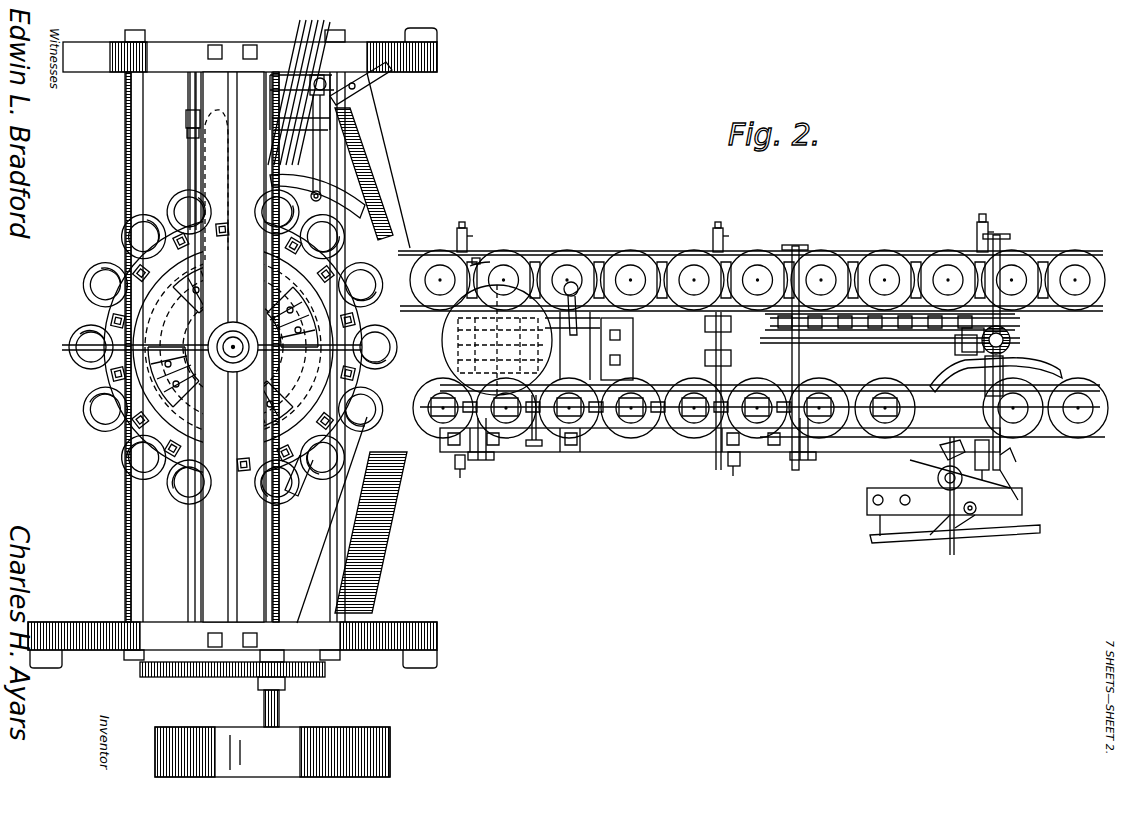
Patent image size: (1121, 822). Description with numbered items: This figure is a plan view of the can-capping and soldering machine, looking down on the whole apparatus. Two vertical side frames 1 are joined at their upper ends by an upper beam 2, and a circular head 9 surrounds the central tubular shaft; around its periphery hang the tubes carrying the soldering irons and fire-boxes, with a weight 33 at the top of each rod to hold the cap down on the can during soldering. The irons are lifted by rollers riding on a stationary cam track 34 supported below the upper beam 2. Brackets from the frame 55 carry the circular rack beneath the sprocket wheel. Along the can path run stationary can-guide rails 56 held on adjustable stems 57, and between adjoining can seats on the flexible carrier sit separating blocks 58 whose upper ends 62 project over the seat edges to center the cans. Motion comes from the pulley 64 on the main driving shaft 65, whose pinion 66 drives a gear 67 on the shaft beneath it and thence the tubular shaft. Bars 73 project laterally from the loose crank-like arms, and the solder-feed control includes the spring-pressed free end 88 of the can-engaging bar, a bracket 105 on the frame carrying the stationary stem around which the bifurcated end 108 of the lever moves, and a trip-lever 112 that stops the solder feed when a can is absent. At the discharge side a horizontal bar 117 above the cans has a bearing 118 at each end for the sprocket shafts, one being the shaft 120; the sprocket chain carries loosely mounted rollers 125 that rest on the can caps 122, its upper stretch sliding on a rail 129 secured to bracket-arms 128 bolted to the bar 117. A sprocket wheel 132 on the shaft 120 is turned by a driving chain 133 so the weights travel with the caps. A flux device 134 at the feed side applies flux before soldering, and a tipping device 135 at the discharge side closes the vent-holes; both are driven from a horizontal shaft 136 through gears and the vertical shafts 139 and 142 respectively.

The vertical side frame 1 is at (405, 635).
The upper beam 2 is at (235, 347).
The circular head 9 is at (78, 378).
The weight 33 is at (92, 347).
The cam track 34 is at (382, 236).
The frame 55 is at (372, 512).
The can-guide rail 56 is at (856, 252).
The stem 57 is at (468, 230).
The separating block 58 is at (478, 268).
The upper end of separating block 62 is at (112, 255).
The pulley 64 is at (342, 738).
The main driving shaft 65 is at (272, 712).
The pinion 66 is at (320, 670).
The gear 67 is at (178, 678).
The bar 73 is at (196, 135).
The free end of bar 88 is at (362, 212).
The bracket 105 is at (342, 66).
The slotted or bifurcated end 108 is at (368, 82).
The trip-lever 112 is at (322, 135).
The horizontal bar 117 is at (648, 450).
The bearing 118 is at (482, 460).
The shaft 120 is at (798, 248).
The can cap 122 is at (632, 278).
The roller 125 is at (616, 414).
The bracket-arm 128 is at (735, 466).
The horizontal rail 129 is at (535, 446).
The sprocket wheel 132 is at (800, 334).
The driving chain 133 is at (900, 316).
The flux device 134 is at (515, 300).
The tipping device 135 is at (990, 445).
The horizontal shaft 136 is at (668, 350).
The vertical shaft 139 is at (501, 340).
The vertical shaft 142 is at (975, 336).